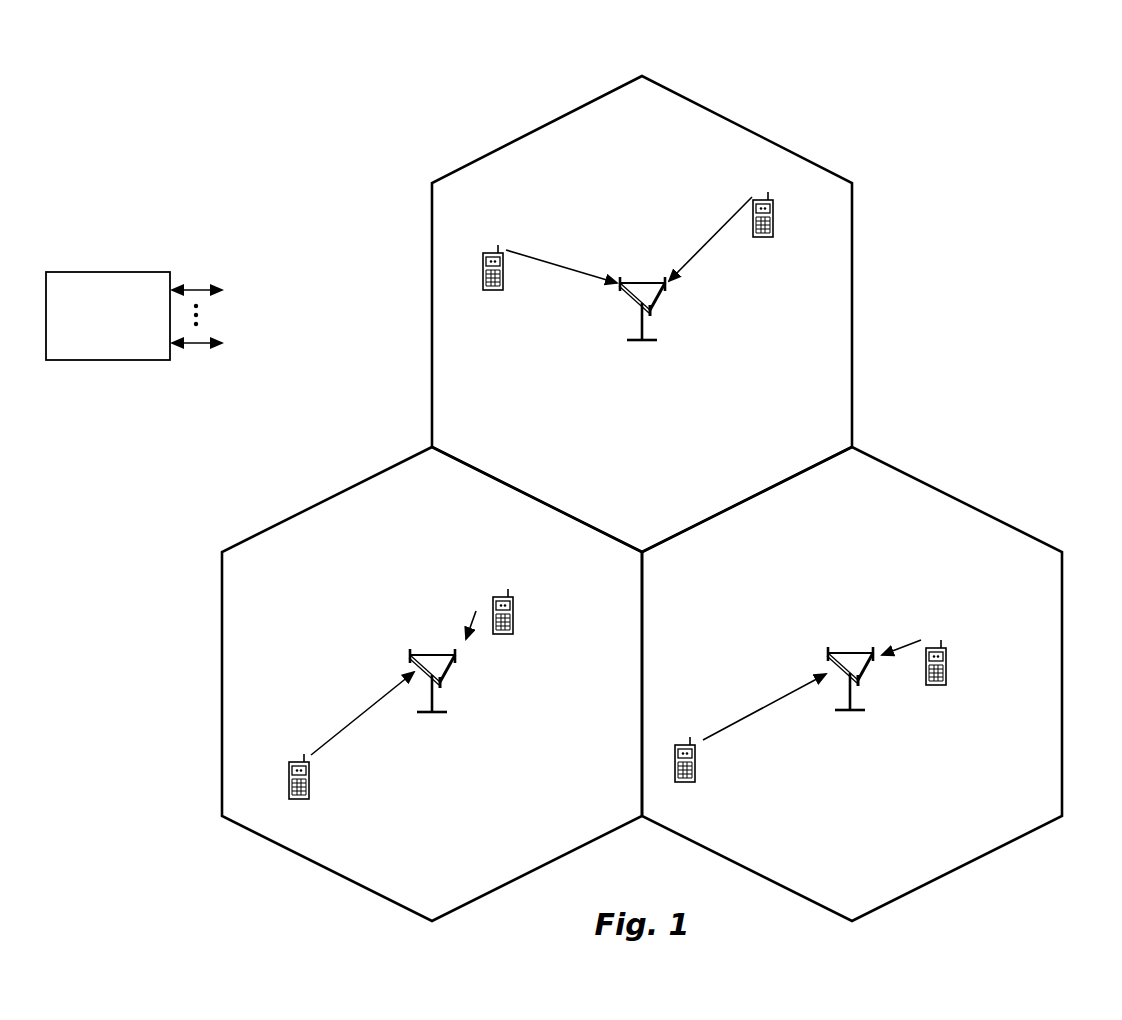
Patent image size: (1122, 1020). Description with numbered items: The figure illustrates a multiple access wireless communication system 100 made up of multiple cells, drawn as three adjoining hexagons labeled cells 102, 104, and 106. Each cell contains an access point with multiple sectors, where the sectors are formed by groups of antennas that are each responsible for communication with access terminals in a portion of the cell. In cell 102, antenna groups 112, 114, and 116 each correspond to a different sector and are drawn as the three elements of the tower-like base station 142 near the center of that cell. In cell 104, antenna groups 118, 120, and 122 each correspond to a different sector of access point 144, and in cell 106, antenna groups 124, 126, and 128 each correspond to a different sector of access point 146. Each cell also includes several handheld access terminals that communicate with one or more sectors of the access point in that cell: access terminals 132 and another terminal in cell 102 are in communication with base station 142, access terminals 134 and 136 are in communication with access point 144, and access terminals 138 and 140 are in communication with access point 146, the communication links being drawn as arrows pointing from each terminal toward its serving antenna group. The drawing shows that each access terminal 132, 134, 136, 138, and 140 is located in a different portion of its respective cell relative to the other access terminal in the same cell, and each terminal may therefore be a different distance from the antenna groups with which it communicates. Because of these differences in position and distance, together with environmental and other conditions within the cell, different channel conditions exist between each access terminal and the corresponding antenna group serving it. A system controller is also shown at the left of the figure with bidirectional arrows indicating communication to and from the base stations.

The multiple access wireless communication system 100 is at (1018, 102).
The cell 102 is at (852, 684).
The cell 104 is at (432, 684).
The cell 106 is at (642, 314).
The antenna group 112 is at (830, 655).
The antenna group 114 is at (863, 683).
The antenna group 116 is at (878, 660).
The antenna group 118 is at (441, 684).
The antenna group 120 is at (456, 660).
The antenna group 122 is at (412, 657).
The antenna group 124 is at (617, 290).
The antenna group 126 is at (655, 312).
The antenna group 128 is at (668, 292).
The access terminal 132 is at (690, 745).
The access terminal 134 is at (505, 597).
The access terminal 136 is at (300, 762).
The access terminal 138 is at (494, 252).
The access terminal 140 is at (763, 199).
The base station 142 is at (852, 653).
The access point 144 is at (428, 654).
The access point 146 is at (634, 283).